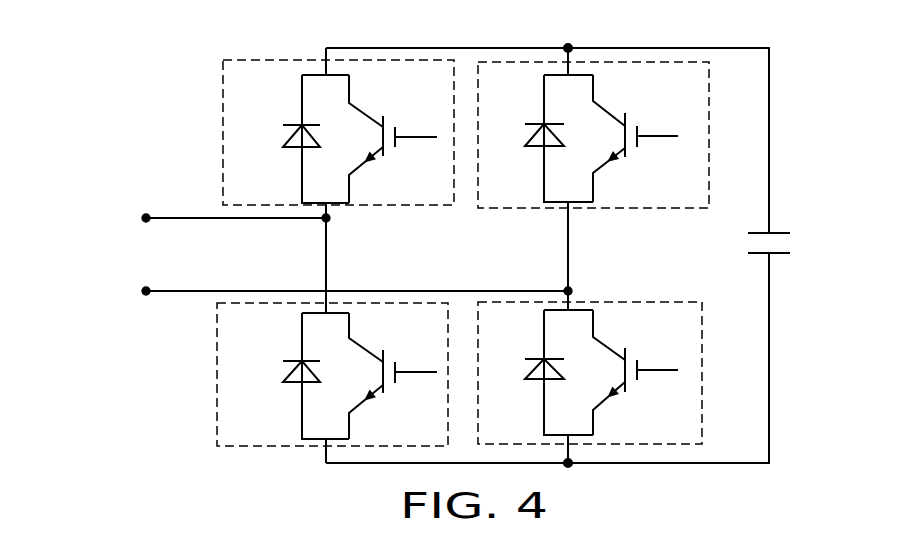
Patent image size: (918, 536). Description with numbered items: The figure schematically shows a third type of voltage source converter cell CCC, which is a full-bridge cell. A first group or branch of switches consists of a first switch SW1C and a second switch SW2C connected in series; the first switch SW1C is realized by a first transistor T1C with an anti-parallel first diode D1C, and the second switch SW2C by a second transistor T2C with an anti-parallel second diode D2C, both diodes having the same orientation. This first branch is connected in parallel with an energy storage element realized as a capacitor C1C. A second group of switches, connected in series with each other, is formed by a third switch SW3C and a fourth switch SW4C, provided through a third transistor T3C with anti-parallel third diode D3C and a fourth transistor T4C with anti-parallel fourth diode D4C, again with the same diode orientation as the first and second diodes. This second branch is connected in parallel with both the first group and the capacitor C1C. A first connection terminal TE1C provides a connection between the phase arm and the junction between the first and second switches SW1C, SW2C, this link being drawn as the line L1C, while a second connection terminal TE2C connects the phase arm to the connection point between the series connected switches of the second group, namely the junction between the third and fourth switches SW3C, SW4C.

The converter cell CCC is at (186, 59).
The capacitor C1C is at (802, 239).
The first connection terminal TE1C is at (100, 206).
The second connection terminal TE2C is at (311, 294).
The line / inductor connection L1C is at (238, 232).
The first switch SW1C is at (338, 167).
The second switch SW2C is at (327, 403).
The third switch SW3C is at (593, 168).
The fourth switch SW4C is at (594, 336).
The first diode D1C is at (278, 119).
The second diode D2C is at (280, 356).
The third diode D3C is at (524, 118).
The fourth diode D4C is at (524, 354).
The first transistor T1C is at (397, 139).
The second transistor T2C is at (395, 376).
The third transistor T3C is at (645, 138).
The fourth transistor T4C is at (645, 372).